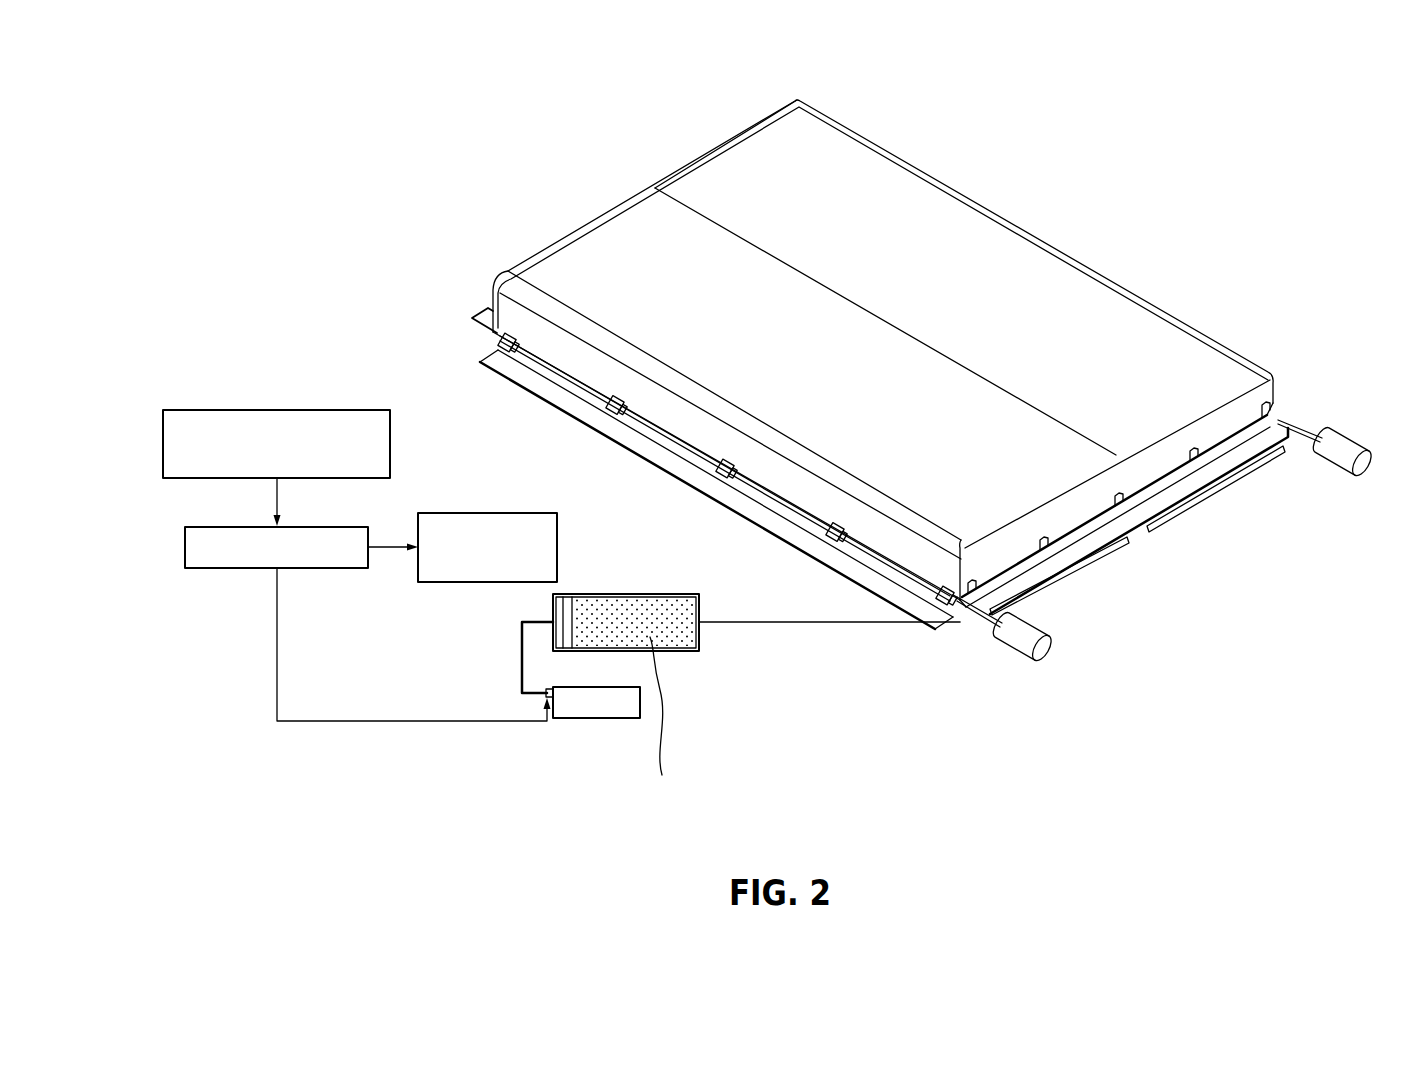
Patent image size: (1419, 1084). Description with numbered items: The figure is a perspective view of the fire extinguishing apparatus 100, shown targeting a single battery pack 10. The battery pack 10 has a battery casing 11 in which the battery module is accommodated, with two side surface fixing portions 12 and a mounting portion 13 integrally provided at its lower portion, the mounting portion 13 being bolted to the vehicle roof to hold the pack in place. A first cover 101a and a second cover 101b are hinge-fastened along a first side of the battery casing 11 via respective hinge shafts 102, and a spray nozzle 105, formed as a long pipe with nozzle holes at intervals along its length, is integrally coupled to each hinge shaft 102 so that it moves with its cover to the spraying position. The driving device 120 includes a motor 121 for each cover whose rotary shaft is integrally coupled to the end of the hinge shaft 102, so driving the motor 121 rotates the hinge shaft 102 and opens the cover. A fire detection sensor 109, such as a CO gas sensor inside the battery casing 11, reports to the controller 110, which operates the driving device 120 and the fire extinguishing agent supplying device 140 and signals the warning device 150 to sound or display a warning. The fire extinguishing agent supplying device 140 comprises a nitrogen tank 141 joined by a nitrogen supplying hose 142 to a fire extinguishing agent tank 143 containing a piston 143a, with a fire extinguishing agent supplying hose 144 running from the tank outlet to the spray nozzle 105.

The battery pack 10 is at (1012, 195).
The battery casing 11 is at (1210, 442).
The side surface fixing portions 12 is at (1067, 517).
The mounting portion 13 is at (913, 597).
The fire extinguishing apparatus 100 is at (820, 715).
The first cover 101a is at (582, 252).
The second cover 101b is at (732, 158).
The hinge shaft 102 is at (697, 452).
The spray nozzle 105 is at (1057, 582).
The fire detection sensor 109 is at (276, 408).
The controller 110 is at (262, 570).
The driving device 120 is at (1022, 677).
The motor 121 is at (1010, 655).
The fire extinguishing agent supplying device 140 is at (689, 672).
The nitrogen tank 141 is at (600, 717).
The nitrogen supplying hose 142 is at (518, 672).
The fire extinguishing agent tank 143 is at (673, 594).
The piston 143a is at (563, 605).
The fire extinguishing agent supplying hose 144 is at (830, 624).
The warning device 150 is at (475, 512).